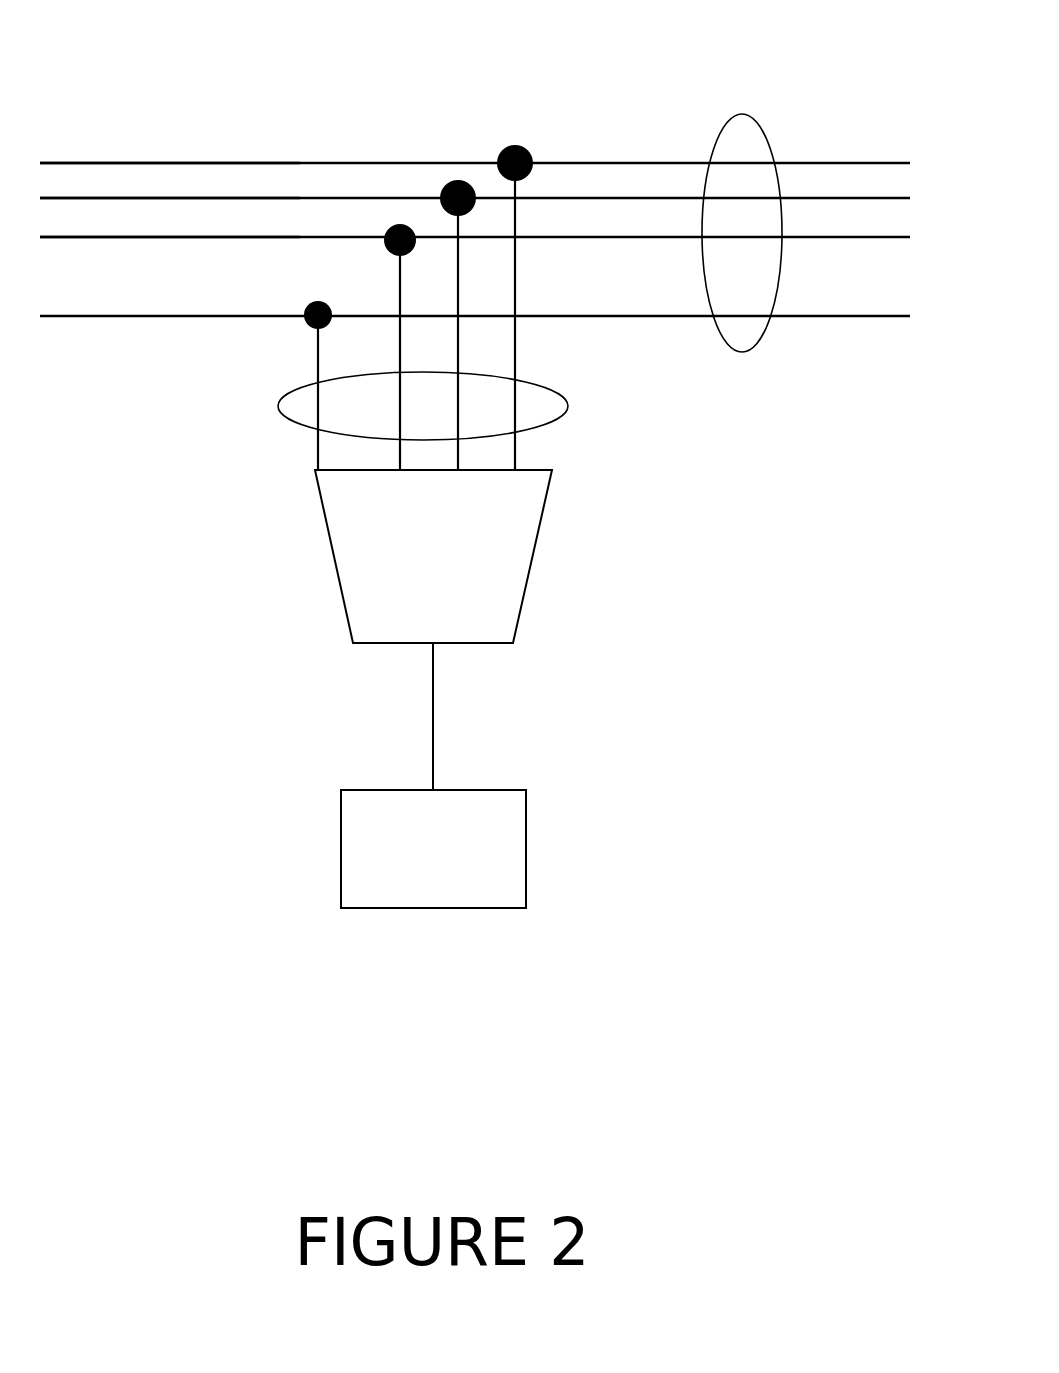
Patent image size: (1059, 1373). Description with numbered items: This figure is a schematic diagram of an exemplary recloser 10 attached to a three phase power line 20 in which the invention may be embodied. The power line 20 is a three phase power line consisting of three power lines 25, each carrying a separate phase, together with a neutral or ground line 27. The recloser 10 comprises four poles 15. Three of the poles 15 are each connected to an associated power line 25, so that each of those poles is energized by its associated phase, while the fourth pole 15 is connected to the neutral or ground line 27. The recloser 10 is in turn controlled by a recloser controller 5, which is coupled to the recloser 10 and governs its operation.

The recloser controller 5 is at (529, 847).
The recloser 10 is at (533, 555).
The poles 15 is at (278, 407).
The power line 20 is at (740, 352).
The power lines 25 is at (130, 241).
The neutral or ground line 27 is at (100, 320).